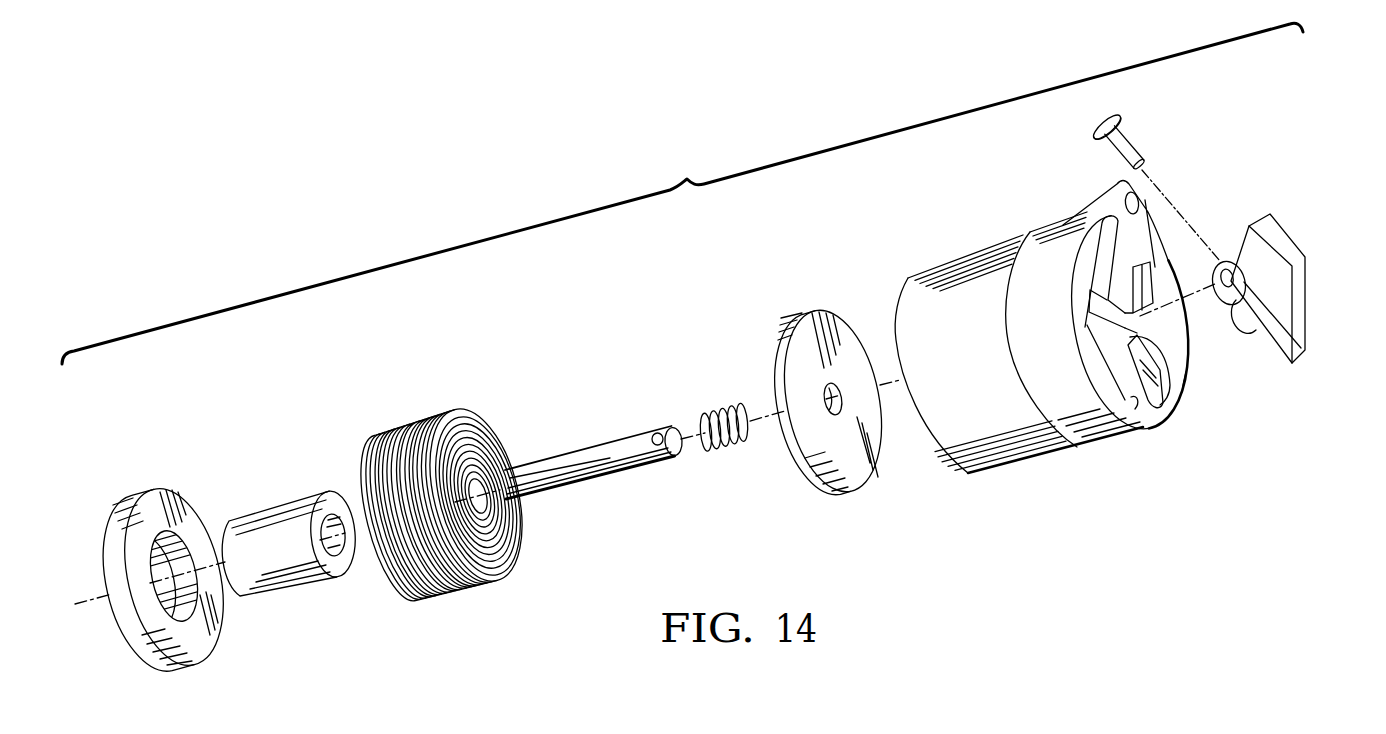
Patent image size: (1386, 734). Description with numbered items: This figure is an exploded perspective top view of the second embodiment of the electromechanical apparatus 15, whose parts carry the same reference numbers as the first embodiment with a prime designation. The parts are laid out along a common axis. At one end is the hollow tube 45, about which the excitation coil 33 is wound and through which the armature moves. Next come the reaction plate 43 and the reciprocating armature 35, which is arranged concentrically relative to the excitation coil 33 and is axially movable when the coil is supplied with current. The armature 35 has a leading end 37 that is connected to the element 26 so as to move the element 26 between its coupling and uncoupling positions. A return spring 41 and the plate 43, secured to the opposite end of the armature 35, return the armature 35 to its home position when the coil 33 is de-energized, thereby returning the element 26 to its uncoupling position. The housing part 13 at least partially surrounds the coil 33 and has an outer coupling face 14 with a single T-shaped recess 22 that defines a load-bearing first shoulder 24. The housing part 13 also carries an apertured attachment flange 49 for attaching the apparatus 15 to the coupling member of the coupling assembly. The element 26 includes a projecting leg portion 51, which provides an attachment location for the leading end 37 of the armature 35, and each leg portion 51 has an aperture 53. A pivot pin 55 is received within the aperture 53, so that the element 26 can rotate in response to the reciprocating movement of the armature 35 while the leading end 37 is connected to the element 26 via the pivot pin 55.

The electromechanical apparatus 15 is at (682, 193).
The hollow tube 45 is at (137, 492).
The reaction plate 43 is at (280, 500).
The excitation coil 33 is at (412, 420).
The reciprocating armature 35 is at (578, 491).
The leading end 37 is at (655, 433).
The return spring 41 is at (723, 405).
The housing part 13 is at (1172, 430).
The T-shaped recess 22 is at (1182, 392).
The outer coupling face 14 is at (1136, 404).
The load-bearing first shoulder 24 is at (1112, 393).
The apertured attachment flange 49 is at (1100, 188).
The pivot pin 55 is at (1133, 138).
The projecting leg portion 51 is at (1230, 255).
The aperture 53 is at (1243, 255).
The element 26 is at (1308, 275).